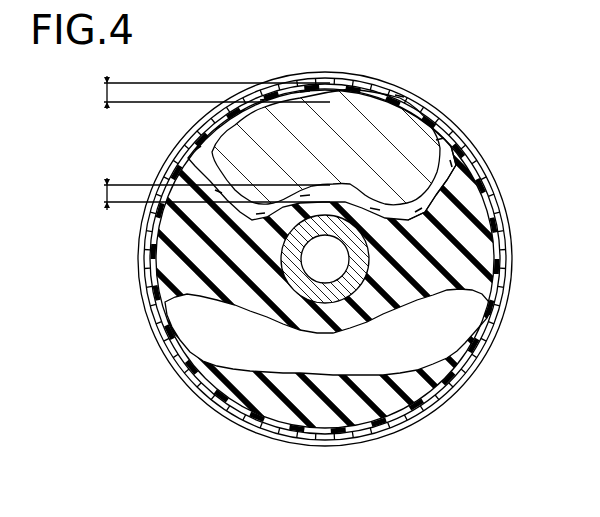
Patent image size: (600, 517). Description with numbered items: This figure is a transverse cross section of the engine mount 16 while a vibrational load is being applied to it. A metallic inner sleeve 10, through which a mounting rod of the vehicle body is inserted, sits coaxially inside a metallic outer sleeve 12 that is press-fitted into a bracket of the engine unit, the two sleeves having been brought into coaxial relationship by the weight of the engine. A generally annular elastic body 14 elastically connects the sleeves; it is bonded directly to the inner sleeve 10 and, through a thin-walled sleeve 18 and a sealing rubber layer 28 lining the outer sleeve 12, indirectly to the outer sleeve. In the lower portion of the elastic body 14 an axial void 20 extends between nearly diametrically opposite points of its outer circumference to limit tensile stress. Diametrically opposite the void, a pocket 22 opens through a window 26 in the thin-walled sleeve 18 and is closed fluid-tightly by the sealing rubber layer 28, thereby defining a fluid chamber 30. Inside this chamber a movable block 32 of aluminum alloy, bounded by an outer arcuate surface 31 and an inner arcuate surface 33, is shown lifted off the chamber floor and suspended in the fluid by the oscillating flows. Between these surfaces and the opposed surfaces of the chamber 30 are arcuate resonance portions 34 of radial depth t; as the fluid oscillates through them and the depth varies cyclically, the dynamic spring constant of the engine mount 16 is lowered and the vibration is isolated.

The inner sleeve 10 is at (322, 290).
The outer sleeve 12 is at (168, 363).
The elastic body 14 is at (235, 292).
The engine mount 16 is at (437, 461).
The thin-walled sleeve 18 is at (247, 416).
The axial void 20 is at (433, 357).
The pocket 22 is at (440, 175).
The window 26 is at (457, 150).
The sealing rubber layer 28 is at (494, 317).
The fluid chamber 30 is at (200, 148).
The outer arcuate surface 31 is at (393, 107).
The movable block 32 is at (392, 133).
The inner arcuate surface 33 is at (420, 218).
The arcuate resonance portions 34 is at (333, 192).